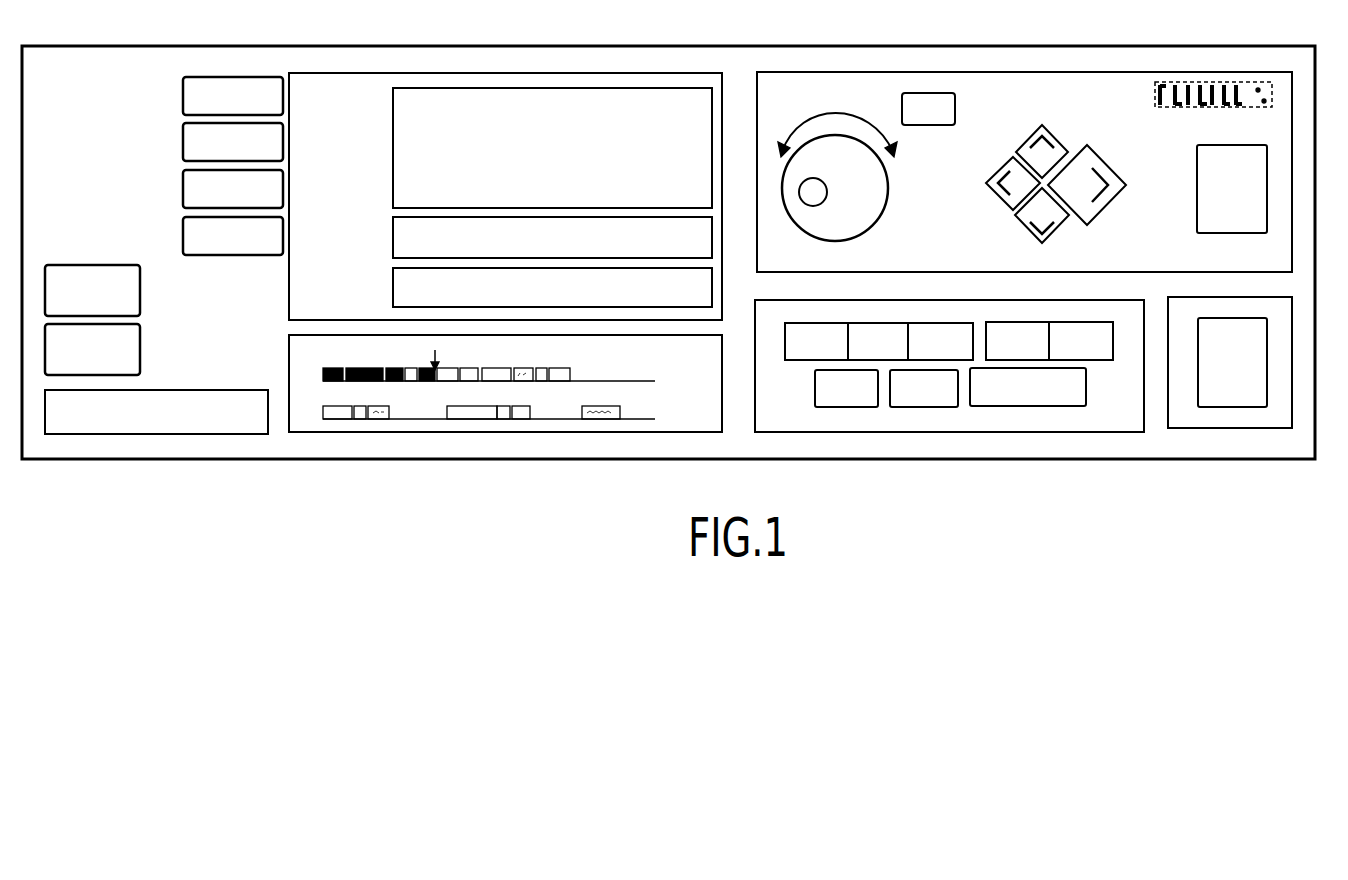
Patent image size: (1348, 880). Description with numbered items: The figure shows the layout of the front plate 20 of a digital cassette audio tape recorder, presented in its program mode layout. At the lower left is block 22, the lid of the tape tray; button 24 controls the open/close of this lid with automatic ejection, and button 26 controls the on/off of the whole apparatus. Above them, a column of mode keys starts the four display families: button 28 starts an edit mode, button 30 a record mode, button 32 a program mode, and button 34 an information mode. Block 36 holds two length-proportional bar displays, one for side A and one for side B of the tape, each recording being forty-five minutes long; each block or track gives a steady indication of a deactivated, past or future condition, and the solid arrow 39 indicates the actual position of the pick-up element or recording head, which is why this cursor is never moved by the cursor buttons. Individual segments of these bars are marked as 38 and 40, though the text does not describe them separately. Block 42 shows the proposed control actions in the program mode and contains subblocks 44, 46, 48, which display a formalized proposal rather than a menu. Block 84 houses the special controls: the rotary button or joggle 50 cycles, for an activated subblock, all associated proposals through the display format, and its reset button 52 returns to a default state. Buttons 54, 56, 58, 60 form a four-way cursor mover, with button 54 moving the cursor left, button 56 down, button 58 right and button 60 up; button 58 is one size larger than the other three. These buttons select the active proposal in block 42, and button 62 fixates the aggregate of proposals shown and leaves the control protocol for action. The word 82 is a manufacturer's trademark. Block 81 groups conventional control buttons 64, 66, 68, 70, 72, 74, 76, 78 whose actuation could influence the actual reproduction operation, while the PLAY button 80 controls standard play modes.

The front plate 20 is at (140, 461).
The lid of the tape tray 22 is at (208, 390).
The open/close button 24 is at (141, 348).
The on/off button 26 is at (141, 289).
The edit button 28 is at (183, 236).
The record button 30 is at (183, 189).
The program button 32 is at (183, 142).
The information button 34 is at (183, 96).
The bar display block 36 is at (505, 398).
The recorded segment indication 38 is at (572, 368).
The solid arrow 39 is at (437, 350).
The segment indication on track B 40 is at (582, 426).
The control action block 42 is at (549, 88).
The subblock 44 is at (712, 122).
The subblock 46 is at (712, 237).
The subblock 48 is at (712, 283).
The rotary button 50 is at (797, 222).
The reset button 52 is at (913, 126).
The left cursor button 54 is at (990, 190).
The down cursor button 56 is at (1024, 225).
The right cursor button 58 is at (1082, 224).
The up cursor button 60 is at (1053, 133).
The fixating button 62 is at (1218, 234).
The control button 64 is at (822, 323).
The control button 66 is at (886, 323).
The control button 68 is at (944, 323).
The control button 70 is at (1020, 322).
The control button 72 is at (1082, 322).
The control button 74 is at (862, 408).
The control button 76 is at (938, 408).
The control button 78 is at (1050, 407).
The PLAY button 80 is at (1233, 408).
The button block 81 is at (1113, 432).
The manufacturer's trademark 82 is at (1272, 95).
The special controls block 84 is at (1292, 196).